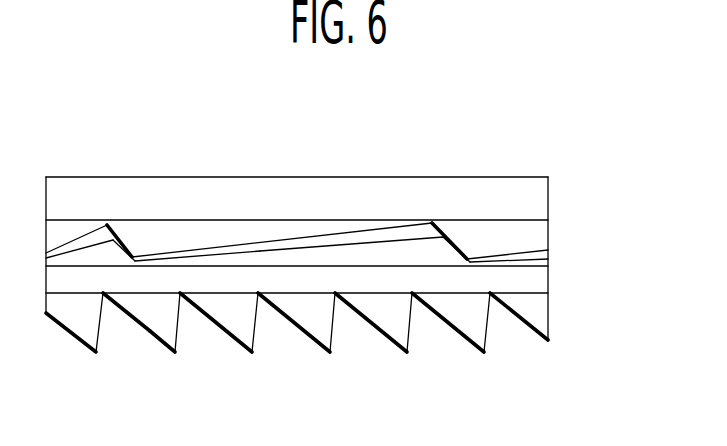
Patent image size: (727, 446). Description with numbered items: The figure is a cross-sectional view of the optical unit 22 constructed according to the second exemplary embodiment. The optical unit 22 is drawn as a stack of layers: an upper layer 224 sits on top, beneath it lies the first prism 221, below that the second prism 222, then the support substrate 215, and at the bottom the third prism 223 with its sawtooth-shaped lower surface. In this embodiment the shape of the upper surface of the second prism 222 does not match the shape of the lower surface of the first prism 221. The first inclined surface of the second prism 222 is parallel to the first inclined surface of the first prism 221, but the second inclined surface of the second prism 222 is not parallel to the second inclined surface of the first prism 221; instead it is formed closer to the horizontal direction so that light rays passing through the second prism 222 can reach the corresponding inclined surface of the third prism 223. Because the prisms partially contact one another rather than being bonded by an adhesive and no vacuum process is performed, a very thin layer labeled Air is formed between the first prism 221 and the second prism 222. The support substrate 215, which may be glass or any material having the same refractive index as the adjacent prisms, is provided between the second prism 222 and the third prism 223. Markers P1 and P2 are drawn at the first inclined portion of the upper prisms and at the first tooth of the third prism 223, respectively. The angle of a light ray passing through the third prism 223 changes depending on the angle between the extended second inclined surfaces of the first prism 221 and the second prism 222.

The optical unit 22 is at (547, 158).
The upper layer 224 is at (546, 205).
The first prism 221 is at (334, 191).
The first pitch / point P1 is at (117, 242).
The second prism 222 is at (334, 210).
The air gap Air is at (547, 255).
The support substrate 215 is at (547, 285).
The third prism 223 is at (334, 369).
The second pitch / point P2 is at (158, 336).